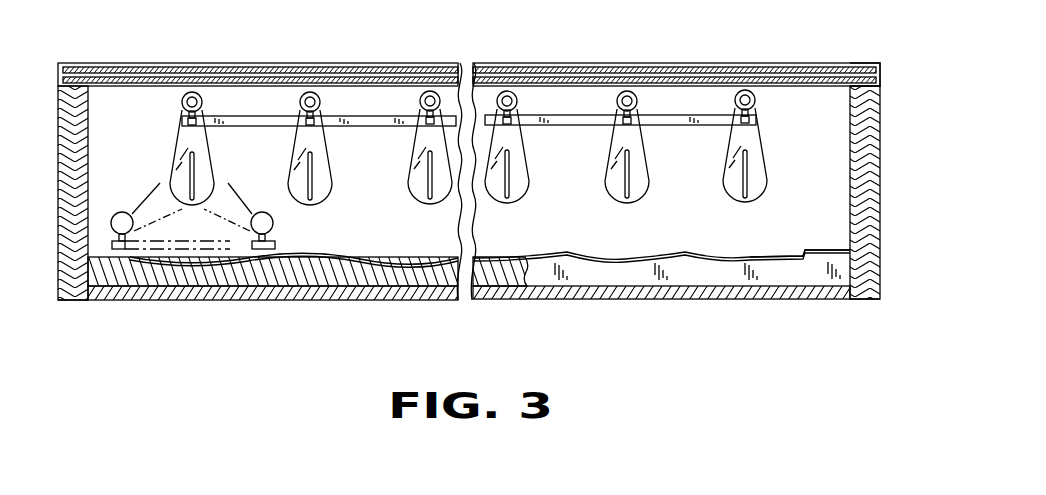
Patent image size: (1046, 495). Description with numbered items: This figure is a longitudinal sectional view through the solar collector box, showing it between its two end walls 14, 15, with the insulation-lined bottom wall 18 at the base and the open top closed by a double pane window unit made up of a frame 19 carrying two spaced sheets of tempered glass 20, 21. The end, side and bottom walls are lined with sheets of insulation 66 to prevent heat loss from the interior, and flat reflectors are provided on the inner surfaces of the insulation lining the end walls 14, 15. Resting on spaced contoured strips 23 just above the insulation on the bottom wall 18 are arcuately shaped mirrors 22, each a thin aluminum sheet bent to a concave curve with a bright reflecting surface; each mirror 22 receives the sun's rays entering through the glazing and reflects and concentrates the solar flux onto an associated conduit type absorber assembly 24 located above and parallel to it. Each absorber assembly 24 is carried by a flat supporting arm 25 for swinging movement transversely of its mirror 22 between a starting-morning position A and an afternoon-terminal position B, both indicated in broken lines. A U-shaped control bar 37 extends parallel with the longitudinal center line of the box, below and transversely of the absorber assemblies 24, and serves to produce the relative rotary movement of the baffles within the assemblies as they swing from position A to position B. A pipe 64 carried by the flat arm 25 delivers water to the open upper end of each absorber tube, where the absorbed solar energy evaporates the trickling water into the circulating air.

The end wall 14 is at (60, 112).
The end wall 15 is at (878, 140).
The bottom wall 18 is at (660, 300).
The frame 19 is at (866, 63).
The sheet of tempered glass 20 is at (414, 70).
The sheet of tempered glass 21 is at (535, 78).
The arcuately shaped mirror 22 is at (552, 254).
The contoured strip 23 is at (735, 270).
The absorber assembly 24 is at (208, 98).
The flat arm 25 is at (180, 140).
The control bar 37 is at (573, 126).
The pipe 64 is at (313, 172).
The insulation 66 is at (77, 190).
The starting-morning position A is at (118, 211).
The afternoon-terminal position B is at (276, 222).